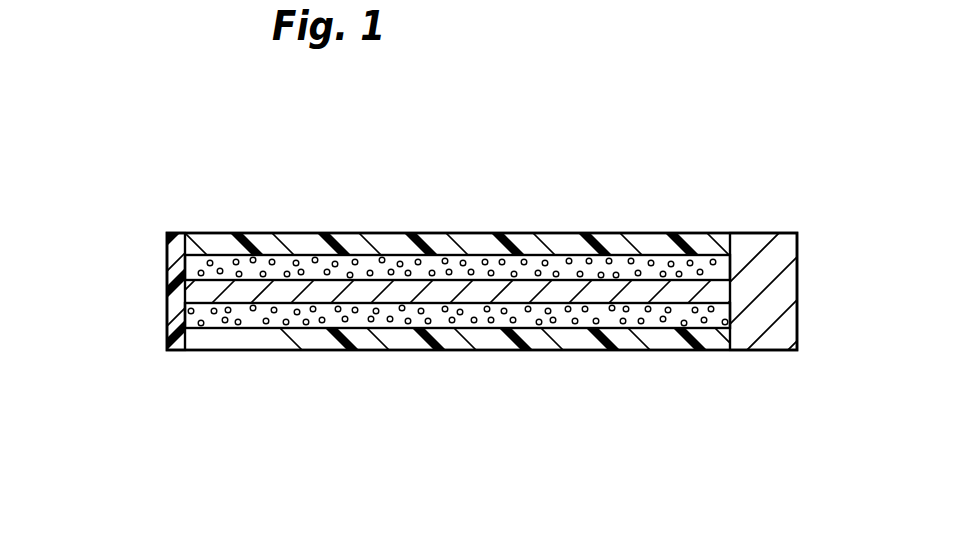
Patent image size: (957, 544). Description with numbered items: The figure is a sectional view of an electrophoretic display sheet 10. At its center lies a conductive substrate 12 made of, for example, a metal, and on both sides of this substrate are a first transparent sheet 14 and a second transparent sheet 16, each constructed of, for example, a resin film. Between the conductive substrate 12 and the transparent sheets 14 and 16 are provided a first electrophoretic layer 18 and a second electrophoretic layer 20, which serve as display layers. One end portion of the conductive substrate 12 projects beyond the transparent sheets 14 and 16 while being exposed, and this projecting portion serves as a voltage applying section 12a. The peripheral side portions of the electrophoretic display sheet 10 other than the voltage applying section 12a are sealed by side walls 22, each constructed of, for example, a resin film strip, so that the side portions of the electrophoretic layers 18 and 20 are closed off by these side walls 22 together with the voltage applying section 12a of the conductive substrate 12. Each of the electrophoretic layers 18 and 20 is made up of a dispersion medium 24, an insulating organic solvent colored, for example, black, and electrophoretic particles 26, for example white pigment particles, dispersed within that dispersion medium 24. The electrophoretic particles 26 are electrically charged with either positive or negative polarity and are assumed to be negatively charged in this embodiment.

The electrophoretic display sheet 10 is at (486, 281).
The conductive substrate 12 is at (501, 270).
The voltage applying section 12a is at (785, 248).
The first transparent sheet 14 is at (387, 233).
The second transparent sheet 16 is at (383, 350).
The first electrophoretic layer 18 is at (653, 145).
The second electrophoretic layer 20 is at (653, 417).
The side wall 22 is at (167, 285).
The dispersion medium 24 is at (564, 262).
The electrophoretic particles 26 is at (598, 268).